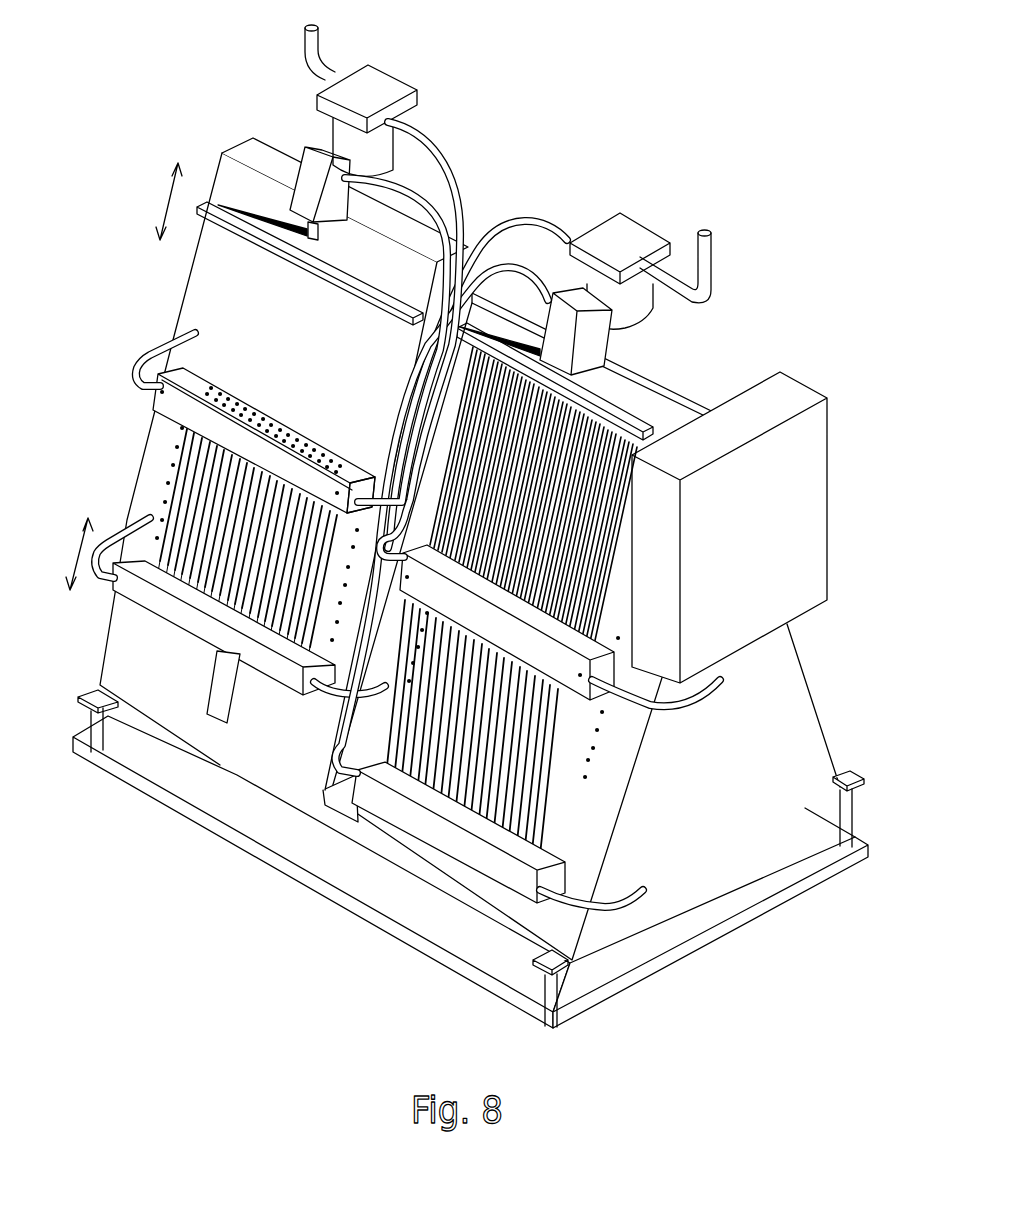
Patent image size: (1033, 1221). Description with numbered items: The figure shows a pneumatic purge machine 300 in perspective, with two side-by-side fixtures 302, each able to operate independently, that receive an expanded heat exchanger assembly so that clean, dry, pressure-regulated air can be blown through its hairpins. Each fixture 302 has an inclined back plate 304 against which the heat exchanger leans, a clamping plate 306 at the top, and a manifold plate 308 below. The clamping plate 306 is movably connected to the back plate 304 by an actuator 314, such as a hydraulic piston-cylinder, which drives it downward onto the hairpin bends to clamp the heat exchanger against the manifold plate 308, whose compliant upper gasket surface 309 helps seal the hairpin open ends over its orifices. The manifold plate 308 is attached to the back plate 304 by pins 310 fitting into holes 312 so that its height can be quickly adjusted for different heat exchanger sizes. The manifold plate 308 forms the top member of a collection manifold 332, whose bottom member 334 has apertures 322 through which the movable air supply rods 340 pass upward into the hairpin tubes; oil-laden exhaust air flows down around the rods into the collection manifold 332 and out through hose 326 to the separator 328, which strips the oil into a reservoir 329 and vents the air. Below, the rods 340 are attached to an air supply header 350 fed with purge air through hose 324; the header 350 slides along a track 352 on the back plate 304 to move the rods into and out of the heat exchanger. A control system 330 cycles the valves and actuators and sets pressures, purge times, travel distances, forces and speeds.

The pneumatic purge machine 300 is at (454, 539).
The fixture 302 is at (365, 418).
The back plate 304 is at (210, 305).
The clamping plate 306 is at (200, 215).
The manifold plate 308 is at (238, 321).
The compliant upper gasket surface 309 is at (244, 346).
The pins 310 is at (221, 401).
The holes 312 is at (165, 483).
The actuator 314 is at (303, 150).
The apertures 322 is at (213, 388).
The hose 324 is at (620, 893).
The hose 326 is at (145, 370).
The separator 328 is at (408, 85).
The reservoir 329 is at (400, 150).
The control system 330 is at (745, 385).
The collection manifold 332 is at (353, 463).
The bottom member 334 is at (175, 425).
The air supply rods 340 is at (543, 812).
The air supply header 350 is at (278, 687).
The track 352 is at (213, 678).